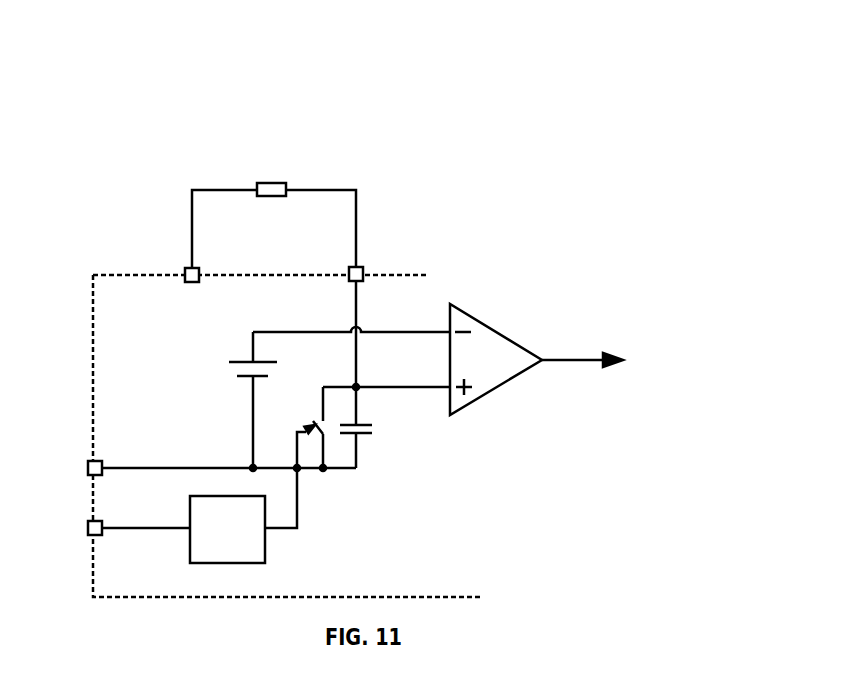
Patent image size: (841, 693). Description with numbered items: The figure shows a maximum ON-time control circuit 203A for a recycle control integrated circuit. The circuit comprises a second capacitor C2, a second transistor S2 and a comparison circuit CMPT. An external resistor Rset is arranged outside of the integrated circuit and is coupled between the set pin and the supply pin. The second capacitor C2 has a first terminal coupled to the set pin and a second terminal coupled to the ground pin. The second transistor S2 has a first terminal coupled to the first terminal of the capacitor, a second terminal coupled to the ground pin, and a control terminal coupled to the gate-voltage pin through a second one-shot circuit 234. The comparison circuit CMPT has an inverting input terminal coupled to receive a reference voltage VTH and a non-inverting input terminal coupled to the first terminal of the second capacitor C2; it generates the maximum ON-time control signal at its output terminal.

The maximum ON-time control circuit 203A is at (433, 94).
The second one-shot circuit 234 is at (213, 564).
The external resistor Rset is at (274, 210).
The reference voltage VTH is at (232, 400).
The second transistor S2 is at (302, 427).
The second capacitor C2 is at (374, 442).
The comparison circuit CMPT is at (496, 359).